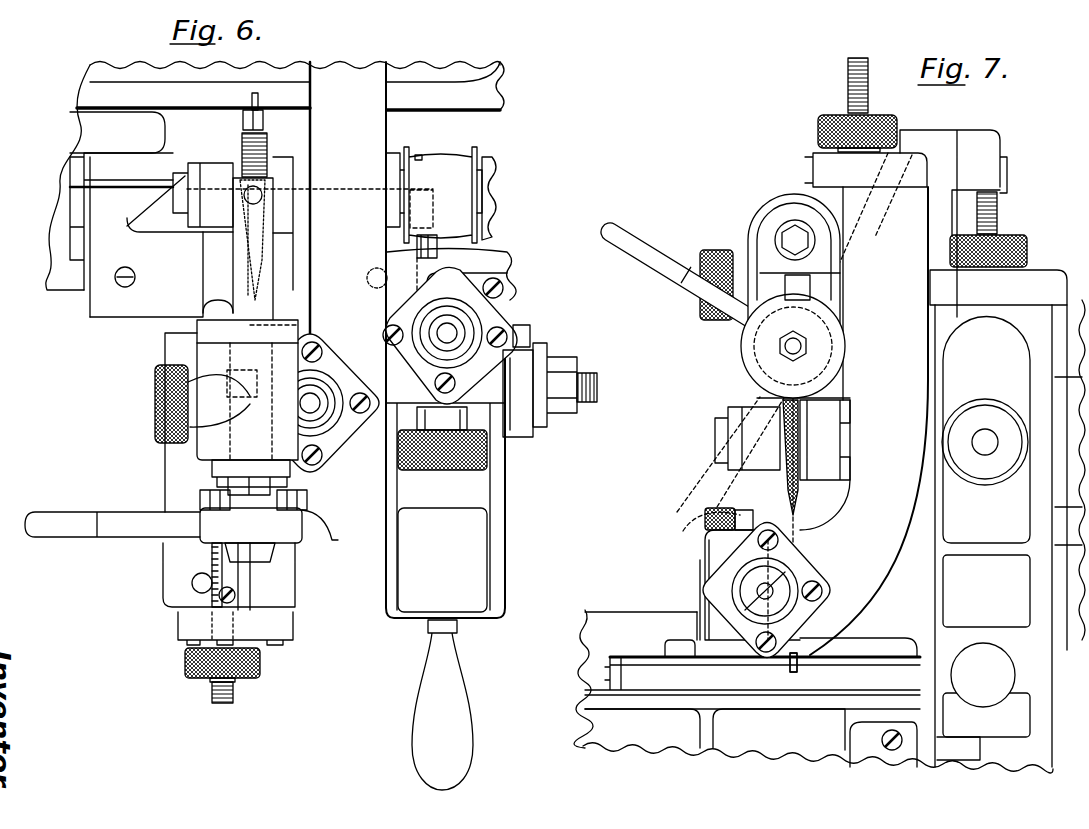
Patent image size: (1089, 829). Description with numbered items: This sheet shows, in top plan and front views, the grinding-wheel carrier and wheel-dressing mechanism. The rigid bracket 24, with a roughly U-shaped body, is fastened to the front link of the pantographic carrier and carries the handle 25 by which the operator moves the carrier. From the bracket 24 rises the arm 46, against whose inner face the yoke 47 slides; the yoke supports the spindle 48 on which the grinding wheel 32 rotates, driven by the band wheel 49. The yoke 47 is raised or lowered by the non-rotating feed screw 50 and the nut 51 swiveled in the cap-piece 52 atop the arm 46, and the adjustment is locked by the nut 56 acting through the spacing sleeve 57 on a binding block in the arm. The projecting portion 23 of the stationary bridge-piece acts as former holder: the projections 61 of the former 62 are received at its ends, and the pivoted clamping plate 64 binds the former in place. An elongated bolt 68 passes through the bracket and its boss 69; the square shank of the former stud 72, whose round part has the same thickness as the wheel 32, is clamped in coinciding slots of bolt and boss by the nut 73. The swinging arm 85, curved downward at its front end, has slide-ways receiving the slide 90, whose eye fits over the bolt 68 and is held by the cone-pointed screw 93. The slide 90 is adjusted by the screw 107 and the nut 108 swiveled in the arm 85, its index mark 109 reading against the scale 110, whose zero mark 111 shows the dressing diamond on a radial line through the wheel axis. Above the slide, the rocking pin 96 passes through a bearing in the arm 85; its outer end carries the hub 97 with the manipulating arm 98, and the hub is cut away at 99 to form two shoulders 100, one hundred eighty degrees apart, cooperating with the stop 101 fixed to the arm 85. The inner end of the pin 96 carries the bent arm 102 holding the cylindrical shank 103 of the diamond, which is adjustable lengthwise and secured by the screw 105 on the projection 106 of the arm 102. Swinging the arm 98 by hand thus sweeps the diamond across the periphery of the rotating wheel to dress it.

In FIG. 6, the projecting portion of the bridge-piece 23 is at (140, 162).
In FIG. 7, the projecting portion of the bridge-piece 23 is at (745, 680).
In FIG. 6, the bracket 24 is at (507, 530).
In FIG. 7, the bracket 24 is at (1050, 662).
In FIG. 6, the handle 25 is at (472, 722).
In FIG. 7, the handle 25 is at (985, 648).
In FIG. 6, the grinding wheel 32 is at (252, 98).
In FIG. 7, the grinding wheel 32 is at (793, 512).
In FIG. 6, the arm 46 is at (507, 395).
In FIG. 7, the arm 46 is at (1050, 300).
In FIG. 6, the yoke 47 is at (502, 272).
In FIG. 6, the spindle 48 is at (175, 178).
In FIG. 7, the spindle 48 is at (715, 438).
In FIG. 6, the band wheel 49 is at (452, 165).
In FIG. 6, the feed screw 50 is at (455, 330).
In FIG. 7, the feed screw 50 is at (1000, 215).
In FIG. 6, the nut 51 is at (532, 338).
In FIG. 7, the nut 51 is at (1010, 267).
In FIG. 6, the cap-piece 52 is at (398, 362).
In FIG. 7, the cap-piece 52 is at (1050, 310).
In FIG. 6, the nut 56 is at (435, 470).
In FIG. 7, the nut 56 is at (985, 485).
In FIG. 6, the spacing sleeve 57 is at (465, 410).
In FIG. 6, the projections of the former 61 is at (72, 214).
In FIG. 6, the former 62 is at (155, 298).
In FIG. 7, the former 62 is at (692, 652).
In FIG. 6, the clamping plate 64 is at (282, 142).
In FIG. 7, the clamping plate 64 is at (697, 640).
In FIG. 6, the bolt 68 is at (600, 386).
In FIG. 7, the boss 69 is at (878, 625).
In FIG. 6, the former stud 72 is at (240, 388).
In FIG. 7, the former stud 72 is at (790, 565).
In FIG. 6, the nut 73 is at (565, 410).
In FIG. 6, the swinging arm 85 is at (312, 264).
In FIG. 7, the swinging arm 85 is at (917, 210).
In FIG. 6, the slide 90 is at (178, 570).
In FIG. 7, the slide 90 is at (705, 545).
In FIG. 7, the screw 93 is at (713, 515).
In FIG. 6, the rocking pin 96 is at (220, 452).
In FIG. 6, the hub 97 is at (200, 540).
In FIG. 7, the hub 97 is at (760, 342).
In FIG. 6, the manipulating arm 98 is at (60, 538).
In FIG. 7, the manipulating arm 98 is at (670, 272).
In FIG. 6, the cut-away portion of the hub 99 is at (302, 520).
In FIG. 6, the shoulders 100 is at (203, 497).
In FIG. 7, the shoulders 100 is at (840, 343).
In FIG. 6, the stop 101 is at (250, 500).
In FIG. 7, the stop 101 is at (812, 290).
In FIG. 6, the bent arm 102 is at (238, 246).
In FIG. 6, the cylindrical shank 103 is at (262, 200).
In FIG. 6, the screw 105 is at (267, 123).
In FIG. 6, the projection 106 is at (245, 113).
In FIG. 6, the screw 107 is at (222, 705).
In FIG. 7, the screw 107 is at (785, 585).
In FIG. 6, the nut 108 is at (260, 662).
In FIG. 7, the nut 108 is at (765, 645).
In FIG. 6, the index mark 109 is at (185, 612).
In FIG. 6, the scale 110 is at (237, 572).
In FIG. 6, the zero mark 111 is at (230, 603).